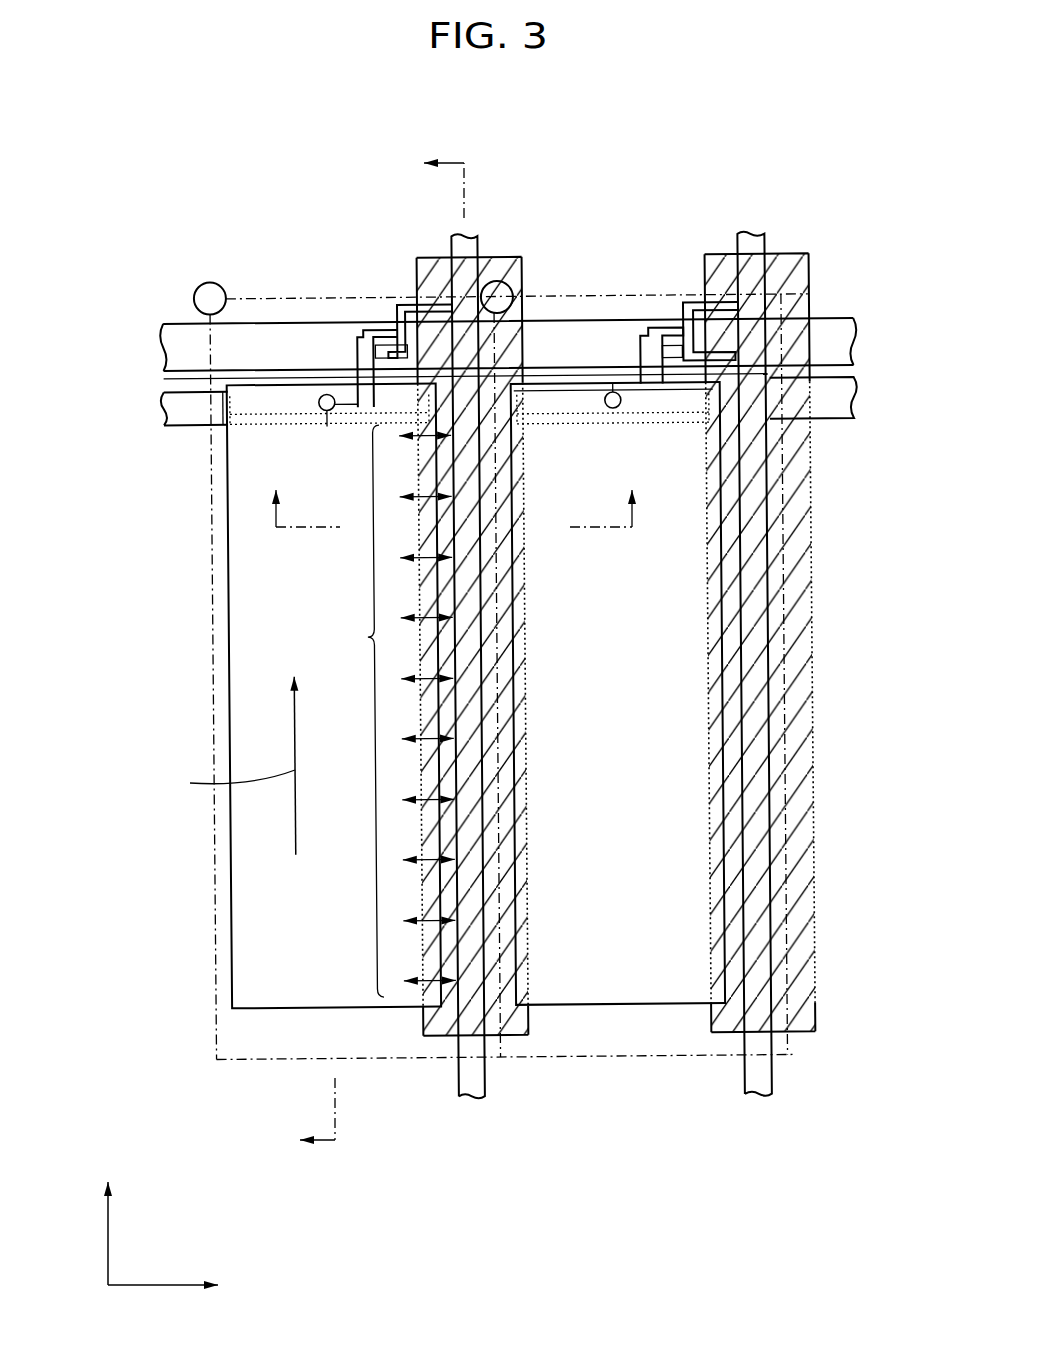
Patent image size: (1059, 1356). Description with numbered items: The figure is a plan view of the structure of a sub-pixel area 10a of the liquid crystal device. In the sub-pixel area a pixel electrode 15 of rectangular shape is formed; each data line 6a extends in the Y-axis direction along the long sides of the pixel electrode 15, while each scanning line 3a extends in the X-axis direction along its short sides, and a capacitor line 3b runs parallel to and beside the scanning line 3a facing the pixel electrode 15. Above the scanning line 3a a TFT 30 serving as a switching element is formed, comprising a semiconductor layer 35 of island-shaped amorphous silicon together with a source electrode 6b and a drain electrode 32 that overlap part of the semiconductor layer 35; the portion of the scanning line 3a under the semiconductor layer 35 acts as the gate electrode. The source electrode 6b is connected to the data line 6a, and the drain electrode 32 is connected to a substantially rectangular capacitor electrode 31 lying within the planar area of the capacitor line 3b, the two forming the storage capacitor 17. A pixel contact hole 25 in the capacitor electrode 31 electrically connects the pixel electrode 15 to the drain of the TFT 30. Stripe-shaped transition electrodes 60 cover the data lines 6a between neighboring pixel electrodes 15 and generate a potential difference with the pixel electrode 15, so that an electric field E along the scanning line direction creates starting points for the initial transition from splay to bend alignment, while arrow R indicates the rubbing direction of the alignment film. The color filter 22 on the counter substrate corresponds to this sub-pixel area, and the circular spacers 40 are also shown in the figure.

The sub-pixel area 10a is at (682, 150).
The scanning line 3a is at (178, 330).
The capacitor line 3b is at (175, 409).
The data line 6a is at (475, 1082).
The source electrode 6b is at (402, 305).
The pixel electrode 15 is at (252, 915).
The storage capacitor 17 is at (215, 414).
The color filter 22 is at (400, 1060).
The pixel contact hole 25 is at (322, 409).
The TFT 30 is at (377, 325).
The capacitor electrode 31 is at (165, 390).
The drain electrode 32 is at (357, 344).
The semiconductor layer 35 is at (390, 346).
The spacer 40 is at (210, 281).
The transition electrode 60 is at (526, 280).